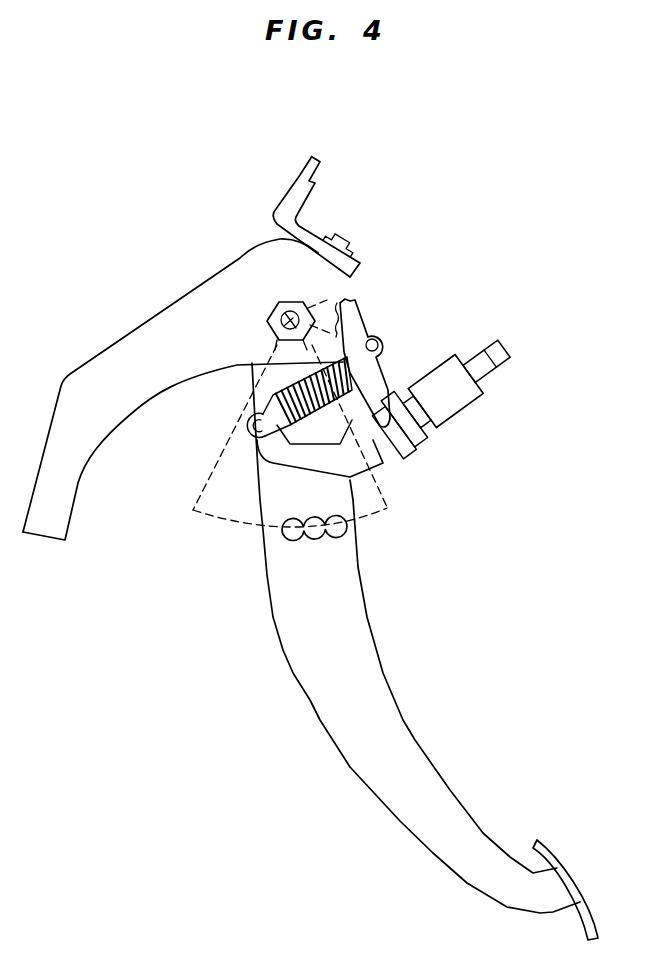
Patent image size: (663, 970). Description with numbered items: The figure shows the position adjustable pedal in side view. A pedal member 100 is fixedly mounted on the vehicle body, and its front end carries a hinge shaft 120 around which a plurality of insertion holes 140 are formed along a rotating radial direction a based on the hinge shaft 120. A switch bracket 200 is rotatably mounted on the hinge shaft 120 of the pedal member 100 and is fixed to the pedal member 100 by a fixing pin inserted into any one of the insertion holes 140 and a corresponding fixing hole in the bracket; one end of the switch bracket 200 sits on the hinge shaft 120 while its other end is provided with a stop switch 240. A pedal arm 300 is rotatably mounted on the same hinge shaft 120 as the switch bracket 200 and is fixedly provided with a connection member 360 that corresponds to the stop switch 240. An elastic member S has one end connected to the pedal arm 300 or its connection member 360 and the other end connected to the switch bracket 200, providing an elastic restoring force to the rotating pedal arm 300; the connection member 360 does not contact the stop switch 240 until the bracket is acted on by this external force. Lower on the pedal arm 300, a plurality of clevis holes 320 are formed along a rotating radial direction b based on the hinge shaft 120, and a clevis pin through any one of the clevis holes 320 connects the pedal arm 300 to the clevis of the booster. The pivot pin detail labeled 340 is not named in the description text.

The pedal member 100 is at (148, 309).
The hinge shaft 120 is at (283, 308).
The insertion holes 140 is at (434, 338).
The lever pivot pin 340 is at (381, 344).
The switch bracket 200 is at (499, 414).
The stop switch 240 is at (394, 365).
The elastic member S is at (265, 403).
The connection member 360 is at (258, 450).
The pedal arm 300 is at (287, 686).
The clevis holes 320 is at (345, 528).
The rotating radial direction of the insertion holes a is at (341, 302).
The rotating radial direction of the clevis holes b is at (238, 528).